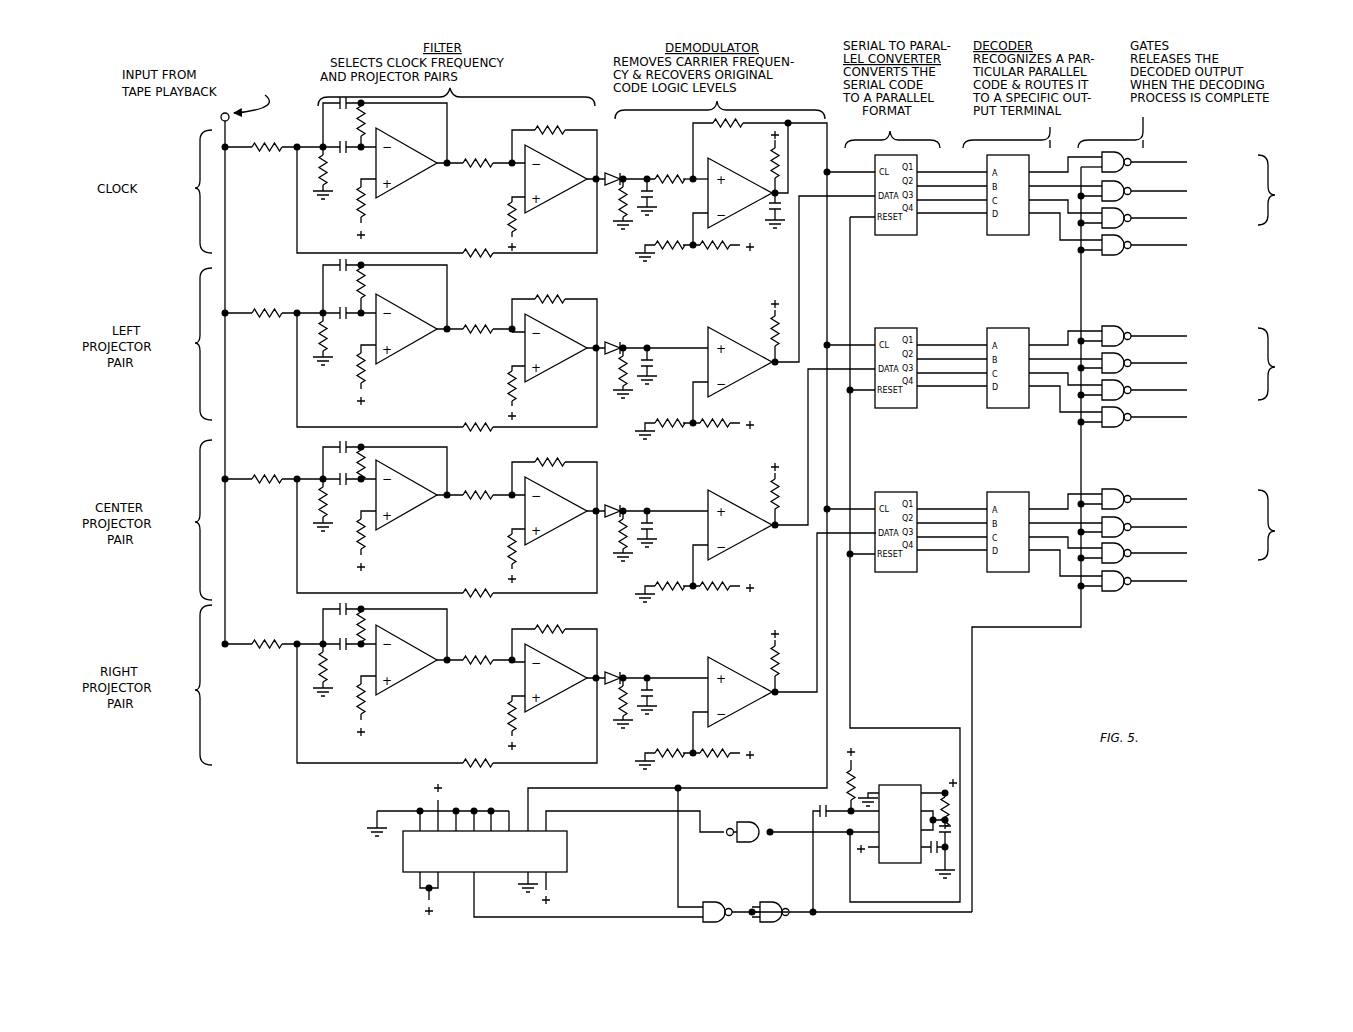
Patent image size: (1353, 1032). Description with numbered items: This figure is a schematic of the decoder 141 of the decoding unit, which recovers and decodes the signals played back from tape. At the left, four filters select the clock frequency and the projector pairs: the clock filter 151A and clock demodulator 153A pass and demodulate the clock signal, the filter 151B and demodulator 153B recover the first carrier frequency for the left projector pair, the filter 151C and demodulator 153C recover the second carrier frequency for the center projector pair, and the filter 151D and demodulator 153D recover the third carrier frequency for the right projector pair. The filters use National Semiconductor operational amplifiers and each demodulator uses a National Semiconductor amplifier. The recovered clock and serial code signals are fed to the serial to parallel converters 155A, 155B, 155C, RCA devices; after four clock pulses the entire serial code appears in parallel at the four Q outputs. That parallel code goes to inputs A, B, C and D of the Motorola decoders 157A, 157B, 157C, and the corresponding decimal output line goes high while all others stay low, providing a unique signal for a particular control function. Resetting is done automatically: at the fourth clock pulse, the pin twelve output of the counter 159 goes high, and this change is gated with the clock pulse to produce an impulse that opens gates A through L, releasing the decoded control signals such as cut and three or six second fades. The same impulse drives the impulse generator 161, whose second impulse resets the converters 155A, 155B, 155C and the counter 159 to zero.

The decoder 141 is at (1288, 151).
The clock filter 151A is at (493, 123).
The filter 151B is at (555, 286).
The filter 151C is at (548, 450).
The filter 151D is at (557, 613).
The clock demodulator 153A is at (738, 124).
The demodulator 153B is at (731, 318).
The demodulator 153C is at (731, 486).
The demodulator 153D is at (733, 652).
The serial to parallel converter 155A is at (921, 168).
The serial to parallel converter 155B is at (931, 321).
The serial to parallel converter 155C is at (926, 484).
The decoder 157A is at (968, 240).
The decoder 157B is at (1023, 321).
The decoder 157C is at (1019, 486).
The counter 159 is at (402, 862).
The impulse generator 161 is at (905, 784).